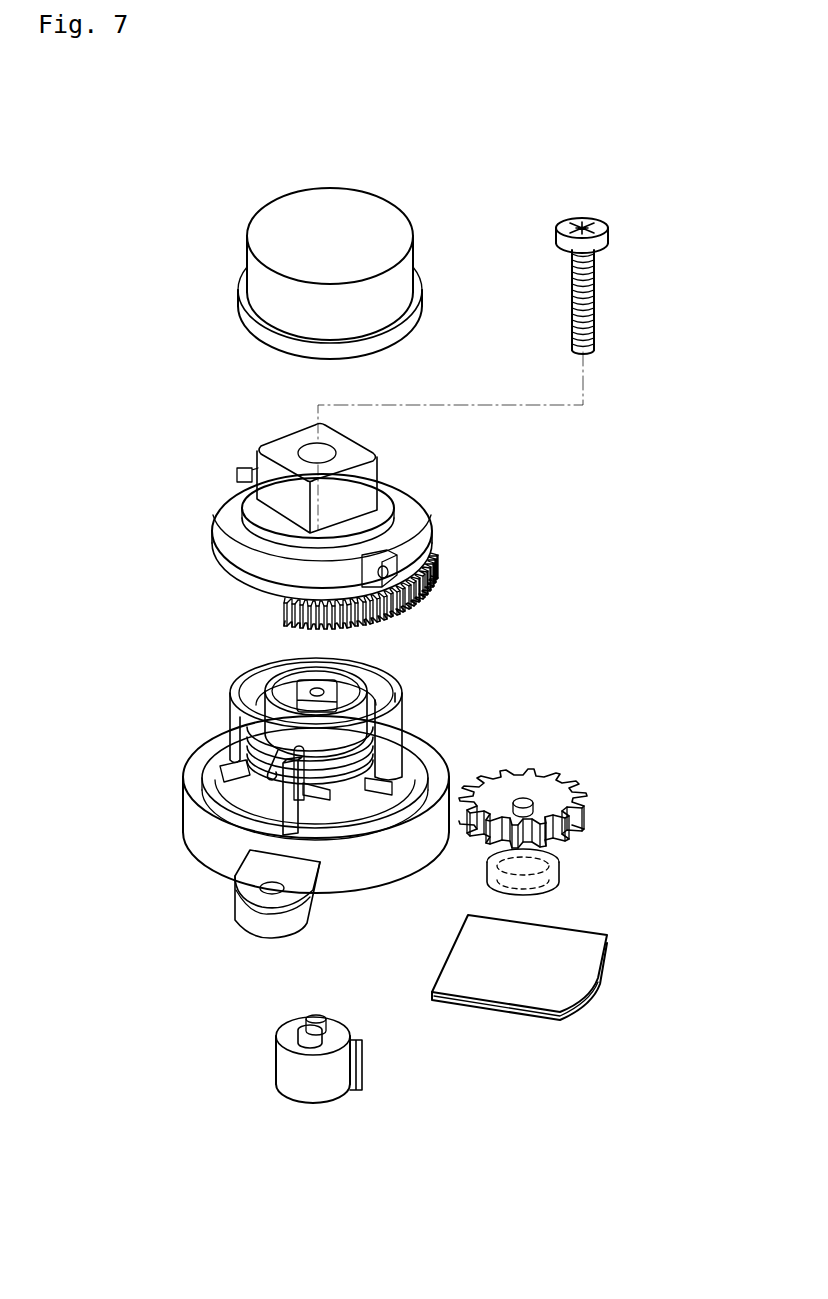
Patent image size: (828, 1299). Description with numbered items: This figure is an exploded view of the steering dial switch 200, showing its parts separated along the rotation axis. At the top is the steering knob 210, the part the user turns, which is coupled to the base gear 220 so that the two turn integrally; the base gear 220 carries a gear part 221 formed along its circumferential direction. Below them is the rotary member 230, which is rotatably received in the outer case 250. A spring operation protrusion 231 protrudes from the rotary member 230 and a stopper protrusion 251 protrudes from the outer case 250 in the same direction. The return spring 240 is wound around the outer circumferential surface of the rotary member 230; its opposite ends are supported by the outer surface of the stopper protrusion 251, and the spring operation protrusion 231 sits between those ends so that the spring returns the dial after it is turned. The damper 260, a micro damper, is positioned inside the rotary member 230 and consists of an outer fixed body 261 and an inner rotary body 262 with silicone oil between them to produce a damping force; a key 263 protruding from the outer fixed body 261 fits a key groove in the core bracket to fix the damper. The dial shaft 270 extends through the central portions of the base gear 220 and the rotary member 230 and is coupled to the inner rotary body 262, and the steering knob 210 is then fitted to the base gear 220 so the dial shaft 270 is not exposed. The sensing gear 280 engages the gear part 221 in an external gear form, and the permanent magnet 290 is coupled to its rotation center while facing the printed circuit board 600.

The steering dial switch 200 is at (341, 180).
The steering knob 210 is at (258, 270).
The base gear 220 is at (321, 526).
The gear part 221 is at (438, 578).
The rotary member 230 is at (327, 707).
The spring operation protrusion 231 is at (372, 722).
The return spring 240 is at (232, 740).
The outer case 250 is at (292, 786).
The stopper protrusion 251 is at (290, 795).
The damper 260 is at (319, 1099).
The outer fixed body 261 is at (292, 1076).
The inner rotary body 262 is at (300, 1027).
The key 263 is at (357, 1070).
The dial shaft 270 is at (598, 300).
The sensing gear 280 is at (538, 785).
The permanent magnet 290 is at (537, 858).
The printed circuit board 600 is at (580, 963).